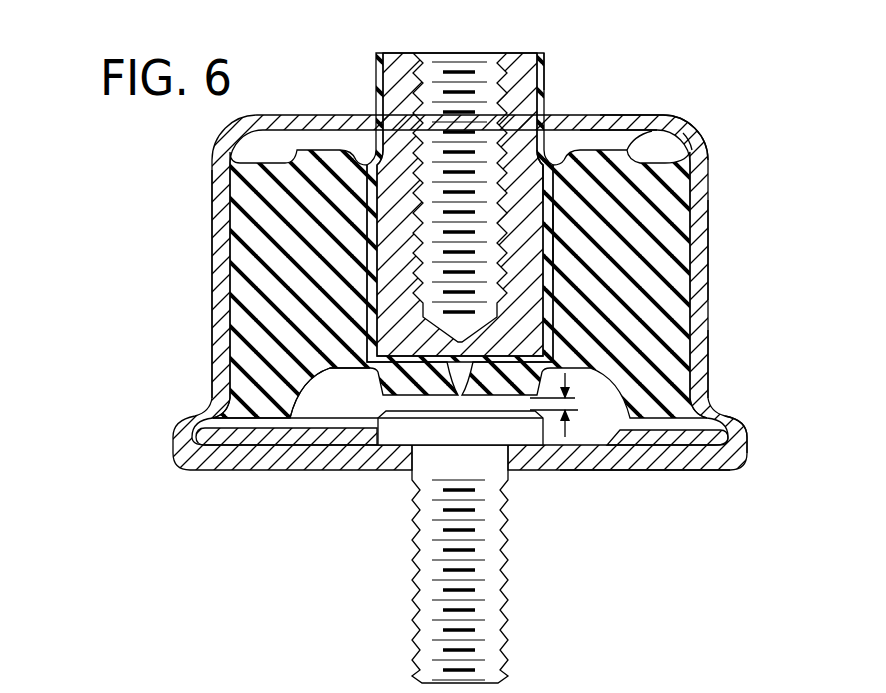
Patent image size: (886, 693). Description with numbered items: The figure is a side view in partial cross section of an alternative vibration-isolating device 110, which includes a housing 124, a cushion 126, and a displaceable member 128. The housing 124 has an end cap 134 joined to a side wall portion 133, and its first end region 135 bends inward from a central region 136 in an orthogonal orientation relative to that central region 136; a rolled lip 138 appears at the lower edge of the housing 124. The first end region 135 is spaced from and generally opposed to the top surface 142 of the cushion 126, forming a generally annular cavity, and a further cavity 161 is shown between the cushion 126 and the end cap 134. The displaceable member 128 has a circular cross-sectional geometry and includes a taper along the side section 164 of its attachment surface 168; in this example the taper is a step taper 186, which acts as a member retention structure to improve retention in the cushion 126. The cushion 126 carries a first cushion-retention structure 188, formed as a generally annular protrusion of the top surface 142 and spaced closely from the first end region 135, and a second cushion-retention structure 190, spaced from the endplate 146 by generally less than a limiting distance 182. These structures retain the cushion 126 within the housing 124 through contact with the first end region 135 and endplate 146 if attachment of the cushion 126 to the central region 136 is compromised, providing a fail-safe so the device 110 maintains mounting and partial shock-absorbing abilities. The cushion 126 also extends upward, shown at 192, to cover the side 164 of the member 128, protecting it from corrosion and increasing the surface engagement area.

The vibration-isolating device 110 is at (118, 223).
The housing 124 is at (202, 347).
The cushion 126 is at (245, 240).
The displaceable member 128 is at (387, 86).
The side wall portion 133 is at (716, 358).
The end cap 134 is at (360, 483).
The first end region 135 is at (660, 125).
The central region 136 is at (706, 270).
The rolled lip 138 is at (743, 447).
The top surface 142 is at (663, 160).
The endplate 146 is at (628, 458).
The cavity 161 is at (323, 402).
The side section 164 is at (544, 90).
The attachment surface 168 is at (552, 242).
The limiting distance 182 is at (580, 406).
The step taper 186 is at (540, 190).
The first cushion-retention structure 188 is at (660, 131).
The second cushion-retention structure 190 is at (668, 452).
The upward extension of cushion 192 is at (545, 68).